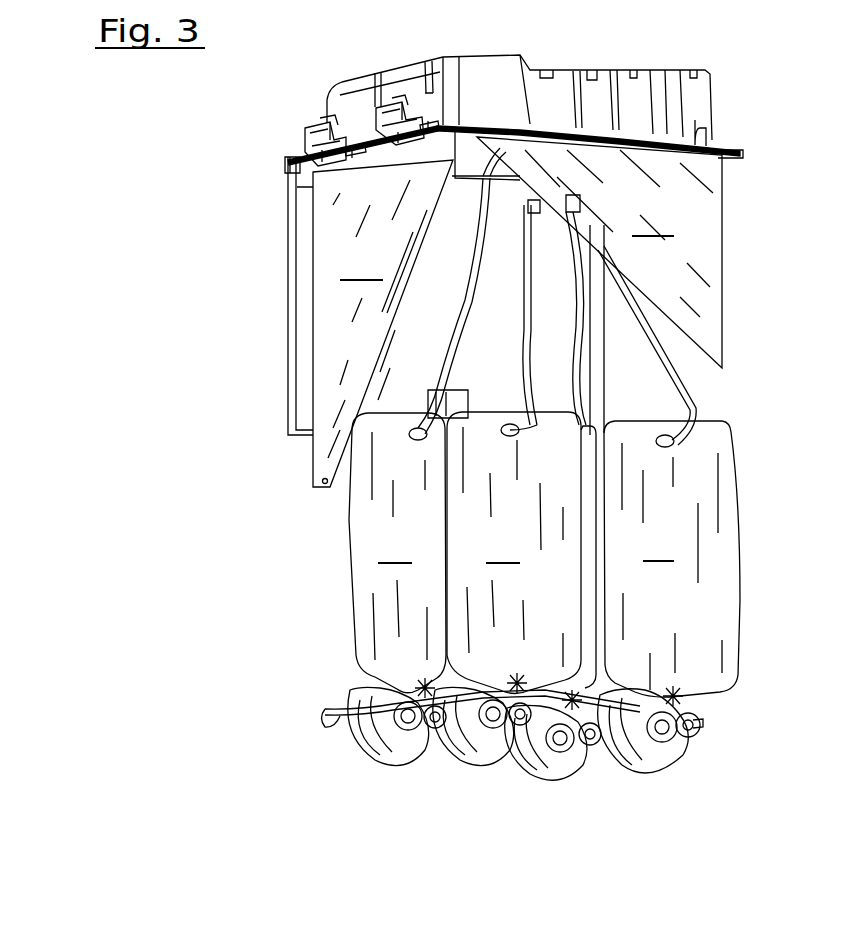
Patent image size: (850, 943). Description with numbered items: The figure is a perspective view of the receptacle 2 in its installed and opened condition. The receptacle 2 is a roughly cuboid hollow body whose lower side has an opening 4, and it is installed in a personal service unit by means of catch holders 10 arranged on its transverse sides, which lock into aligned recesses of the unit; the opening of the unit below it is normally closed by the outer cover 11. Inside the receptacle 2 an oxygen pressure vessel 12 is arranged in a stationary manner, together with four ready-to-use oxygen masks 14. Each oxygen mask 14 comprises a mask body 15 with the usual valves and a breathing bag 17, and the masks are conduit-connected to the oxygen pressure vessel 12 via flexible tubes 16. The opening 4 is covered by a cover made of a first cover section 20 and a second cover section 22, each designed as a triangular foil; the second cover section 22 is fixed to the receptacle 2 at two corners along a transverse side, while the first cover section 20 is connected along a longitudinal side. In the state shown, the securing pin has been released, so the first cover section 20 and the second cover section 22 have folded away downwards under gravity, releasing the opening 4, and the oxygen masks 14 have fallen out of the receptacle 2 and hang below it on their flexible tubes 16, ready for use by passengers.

The receptacle 2 is at (693, 103).
The opening 4 is at (483, 188).
The catch holder 10 is at (385, 95).
The outer cover 11 is at (299, 299).
The oxygen pressure vessel 12 is at (465, 163).
The oxygen mask 14 is at (342, 673).
The mask body 15 is at (388, 757).
The flexible tube 16 is at (437, 333).
The breathing bag 17 is at (593, 645).
The first cover section 20 is at (599, 252).
The second cover section 22 is at (383, 323).